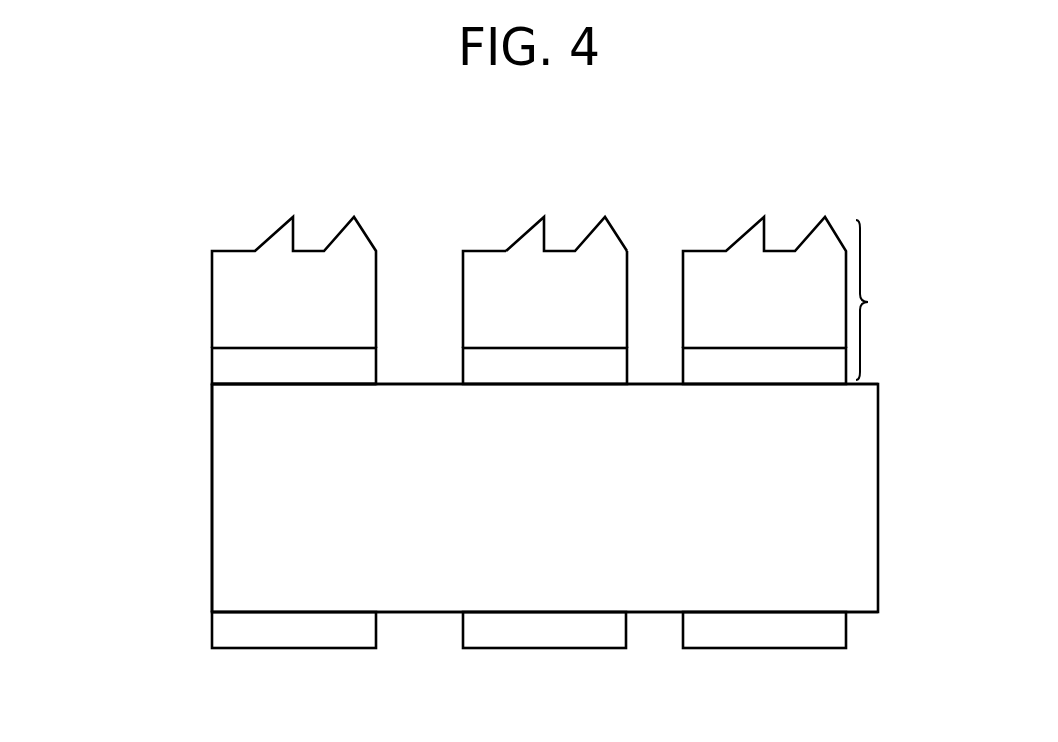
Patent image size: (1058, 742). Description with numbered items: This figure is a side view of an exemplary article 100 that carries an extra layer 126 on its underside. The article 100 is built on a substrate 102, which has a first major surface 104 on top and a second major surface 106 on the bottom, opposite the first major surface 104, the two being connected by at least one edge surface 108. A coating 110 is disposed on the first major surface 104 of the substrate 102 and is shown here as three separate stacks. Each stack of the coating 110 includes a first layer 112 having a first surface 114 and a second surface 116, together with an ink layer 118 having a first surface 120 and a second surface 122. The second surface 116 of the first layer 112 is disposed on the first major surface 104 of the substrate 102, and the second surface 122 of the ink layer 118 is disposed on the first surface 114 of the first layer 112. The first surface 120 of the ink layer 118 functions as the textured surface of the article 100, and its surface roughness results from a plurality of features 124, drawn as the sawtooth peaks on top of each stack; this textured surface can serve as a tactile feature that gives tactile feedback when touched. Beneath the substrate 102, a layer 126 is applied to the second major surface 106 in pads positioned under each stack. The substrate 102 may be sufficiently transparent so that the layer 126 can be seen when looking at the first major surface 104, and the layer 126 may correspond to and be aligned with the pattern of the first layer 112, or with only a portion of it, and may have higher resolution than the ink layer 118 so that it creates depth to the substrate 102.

The article 100 is at (130, 312).
The substrate 102 is at (848, 502).
The first major surface 104 is at (873, 385).
The second major surface 106 is at (435, 612).
The edge surface 108 is at (212, 497).
The coating 110 is at (884, 300).
The first layer 112 is at (212, 365).
The first surface of first layer 114 is at (376, 348).
The second surface of first layer 116 is at (376, 383).
The ink layer 118 is at (477, 282).
The first surface of ink layer 120 is at (705, 248).
The second surface of ink layer 122 is at (683, 348).
The features 124 is at (522, 230).
The layer 126 is at (305, 648).